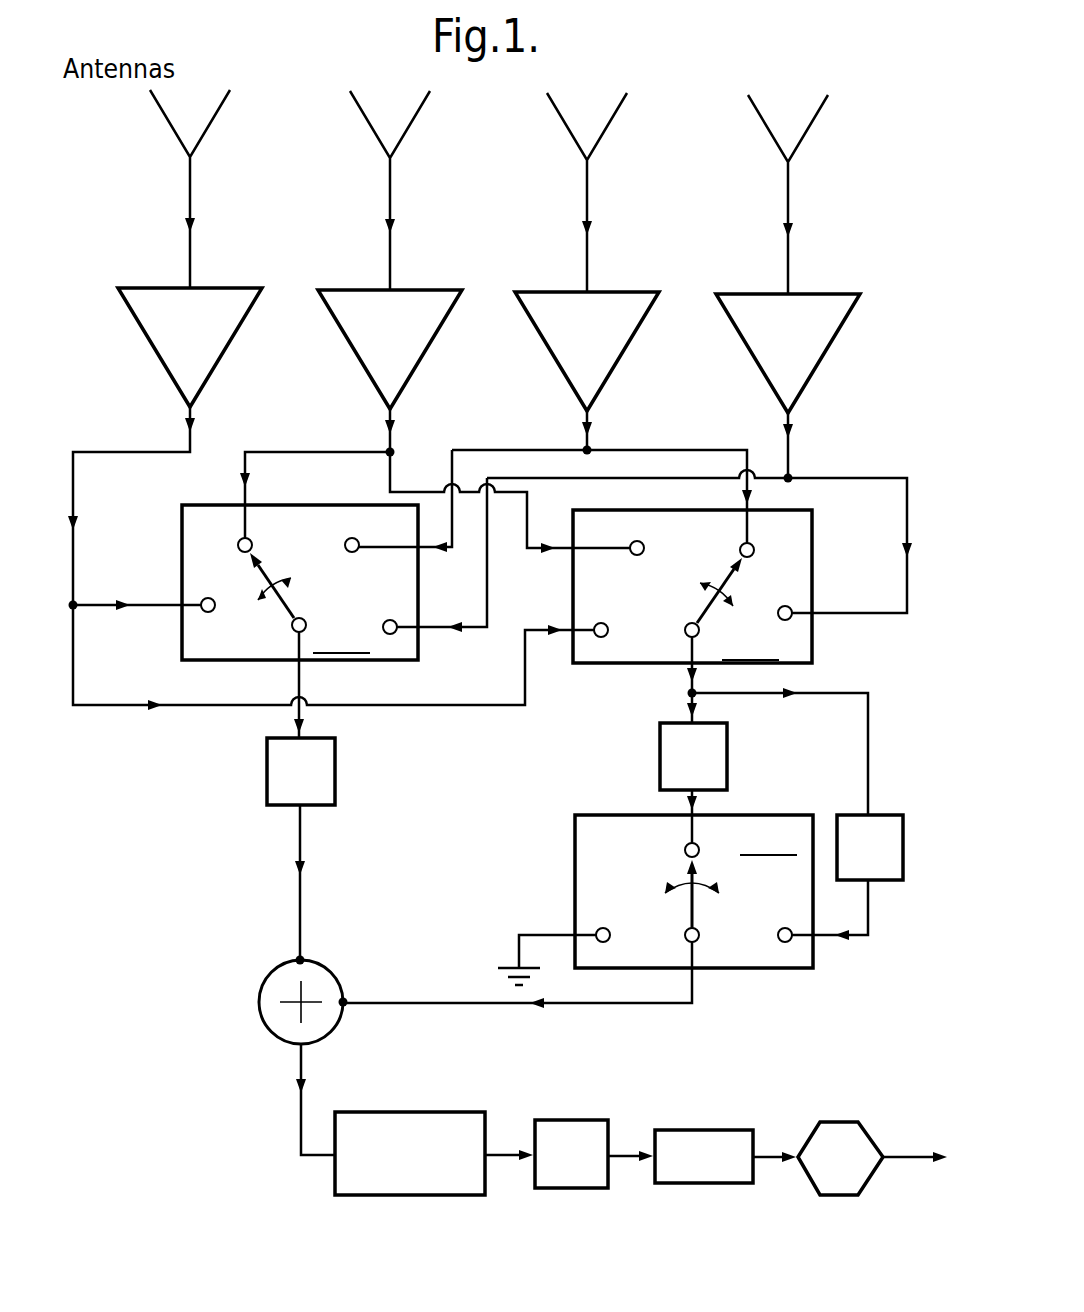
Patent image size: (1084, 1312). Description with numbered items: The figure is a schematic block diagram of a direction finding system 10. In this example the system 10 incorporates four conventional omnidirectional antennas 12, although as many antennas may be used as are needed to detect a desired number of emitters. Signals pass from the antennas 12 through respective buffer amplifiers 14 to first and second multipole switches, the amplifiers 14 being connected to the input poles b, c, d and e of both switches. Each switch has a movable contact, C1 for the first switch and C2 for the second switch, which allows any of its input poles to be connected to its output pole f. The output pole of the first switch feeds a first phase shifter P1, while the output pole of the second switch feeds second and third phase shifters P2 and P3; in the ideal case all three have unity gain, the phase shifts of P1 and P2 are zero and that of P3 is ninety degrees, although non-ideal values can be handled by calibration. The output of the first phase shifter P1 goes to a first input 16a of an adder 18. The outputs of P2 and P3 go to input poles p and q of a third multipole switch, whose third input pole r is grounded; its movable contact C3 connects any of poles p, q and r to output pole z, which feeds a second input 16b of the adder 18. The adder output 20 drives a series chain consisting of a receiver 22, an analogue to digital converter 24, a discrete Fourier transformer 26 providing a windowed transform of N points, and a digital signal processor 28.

The direction finding system 10 is at (509, 707).
The antennas 12 is at (177, 133).
The buffer amplifiers 14 is at (228, 288).
The first input 16a is at (303, 957).
The second input 16b is at (345, 1006).
The adder 18 is at (258, 990).
The output 20 is at (298, 1046).
The receiver 22 is at (433, 1112).
The analogue to digital converter 24 is at (568, 1120).
The discrete Fourier transformer 26 is at (700, 1130).
The digital signal processor 28 is at (838, 1122).
The first phase shifter P1 is at (373, 757).
The second phase shifter P2 is at (658, 752).
The third phase shifter P3 is at (903, 842).
The movable contact C1 is at (290, 603).
The movable contact C2 is at (700, 612).
The movable contact C3 is at (692, 918).